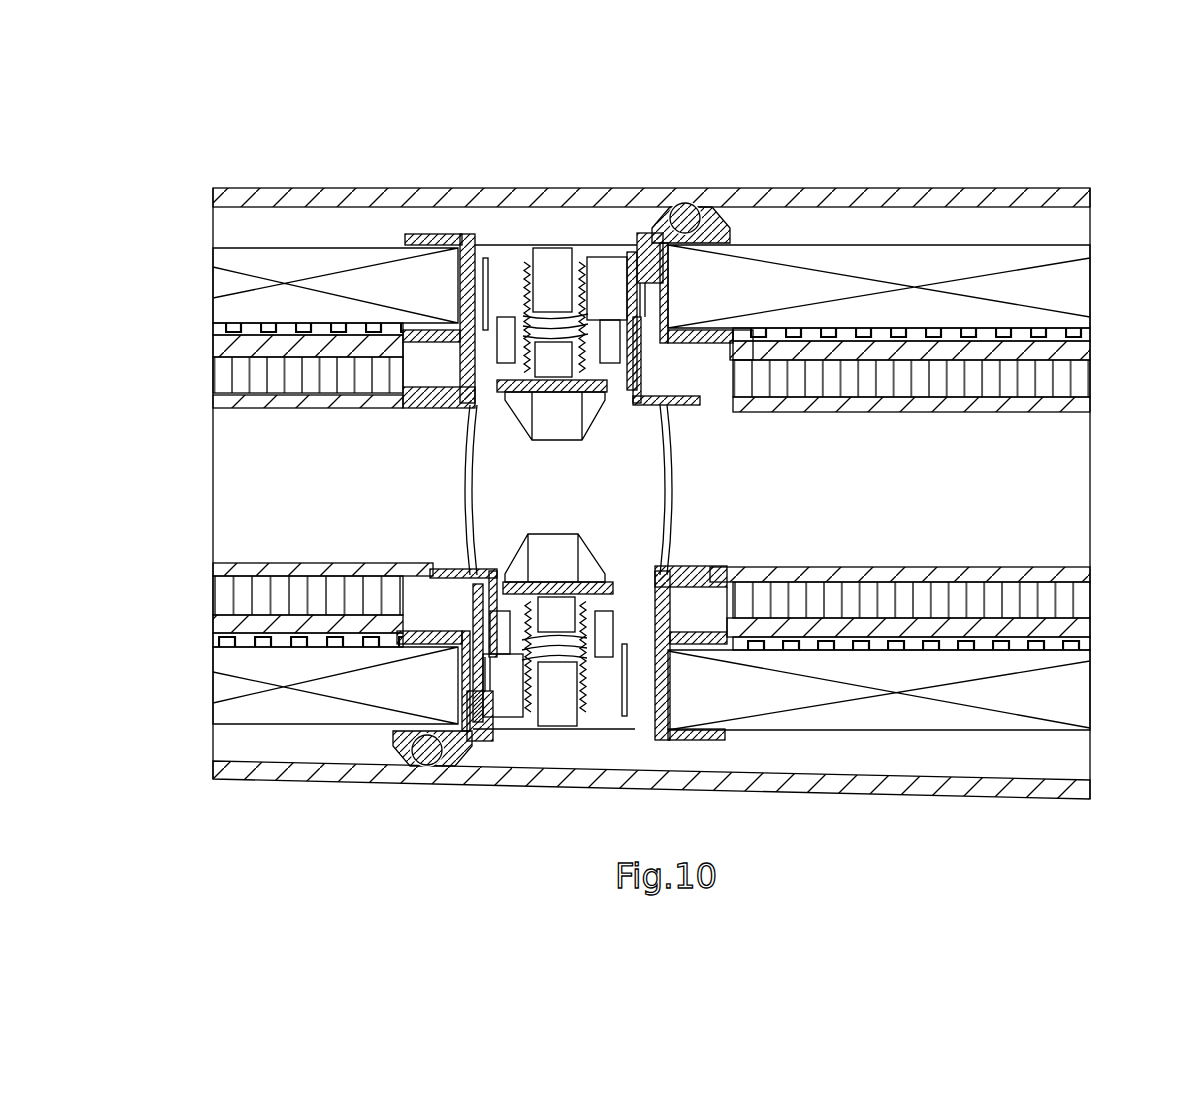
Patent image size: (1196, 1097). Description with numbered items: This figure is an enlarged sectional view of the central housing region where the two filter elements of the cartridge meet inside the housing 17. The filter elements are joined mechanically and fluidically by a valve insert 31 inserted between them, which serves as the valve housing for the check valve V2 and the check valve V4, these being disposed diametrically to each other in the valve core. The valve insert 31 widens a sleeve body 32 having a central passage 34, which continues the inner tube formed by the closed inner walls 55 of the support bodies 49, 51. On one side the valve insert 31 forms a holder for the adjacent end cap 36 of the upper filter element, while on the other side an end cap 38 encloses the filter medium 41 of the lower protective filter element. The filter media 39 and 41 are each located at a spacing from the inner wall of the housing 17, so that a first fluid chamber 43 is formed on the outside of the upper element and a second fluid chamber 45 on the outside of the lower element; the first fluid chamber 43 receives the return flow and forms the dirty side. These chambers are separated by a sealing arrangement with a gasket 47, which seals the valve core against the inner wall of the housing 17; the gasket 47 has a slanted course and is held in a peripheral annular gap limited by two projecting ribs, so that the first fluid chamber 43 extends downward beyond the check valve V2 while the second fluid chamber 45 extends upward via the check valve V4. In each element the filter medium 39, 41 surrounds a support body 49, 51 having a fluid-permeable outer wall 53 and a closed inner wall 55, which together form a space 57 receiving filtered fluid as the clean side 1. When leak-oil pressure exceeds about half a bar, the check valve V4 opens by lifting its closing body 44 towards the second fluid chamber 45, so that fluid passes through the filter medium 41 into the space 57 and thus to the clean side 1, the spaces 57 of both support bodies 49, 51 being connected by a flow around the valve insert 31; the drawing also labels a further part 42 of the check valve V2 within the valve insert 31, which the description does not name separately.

The clean side 1 is at (707, 370).
The housing 17 is at (853, 190).
The valve insert 31 is at (503, 172).
The sleeve body 32 is at (650, 370).
The central passage 34 is at (465, 547).
The end cap 36 is at (680, 300).
The end cap 38 is at (432, 224).
The filter medium 39 is at (945, 290).
The filter medium 41 is at (297, 280).
The valve piston 42 is at (548, 598).
The first fluid chamber 43 is at (770, 750).
The closing body 44 is at (515, 395).
The second fluid chamber 45 is at (370, 230).
The gasket 47 is at (432, 770).
The support body 49 is at (905, 335).
The support body 51 is at (262, 340).
The fluid-permeable outer wall 53 is at (1040, 340).
The closed inner wall 55 is at (250, 577).
The space 57 is at (298, 377).
The check valve V2 is at (510, 700).
The check valve V4 is at (603, 282).